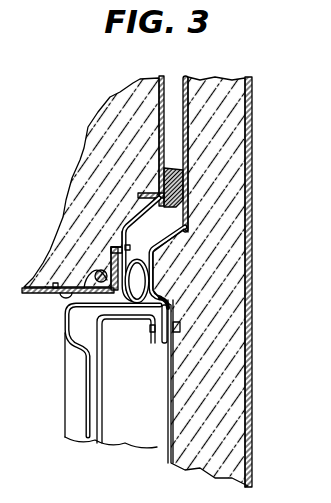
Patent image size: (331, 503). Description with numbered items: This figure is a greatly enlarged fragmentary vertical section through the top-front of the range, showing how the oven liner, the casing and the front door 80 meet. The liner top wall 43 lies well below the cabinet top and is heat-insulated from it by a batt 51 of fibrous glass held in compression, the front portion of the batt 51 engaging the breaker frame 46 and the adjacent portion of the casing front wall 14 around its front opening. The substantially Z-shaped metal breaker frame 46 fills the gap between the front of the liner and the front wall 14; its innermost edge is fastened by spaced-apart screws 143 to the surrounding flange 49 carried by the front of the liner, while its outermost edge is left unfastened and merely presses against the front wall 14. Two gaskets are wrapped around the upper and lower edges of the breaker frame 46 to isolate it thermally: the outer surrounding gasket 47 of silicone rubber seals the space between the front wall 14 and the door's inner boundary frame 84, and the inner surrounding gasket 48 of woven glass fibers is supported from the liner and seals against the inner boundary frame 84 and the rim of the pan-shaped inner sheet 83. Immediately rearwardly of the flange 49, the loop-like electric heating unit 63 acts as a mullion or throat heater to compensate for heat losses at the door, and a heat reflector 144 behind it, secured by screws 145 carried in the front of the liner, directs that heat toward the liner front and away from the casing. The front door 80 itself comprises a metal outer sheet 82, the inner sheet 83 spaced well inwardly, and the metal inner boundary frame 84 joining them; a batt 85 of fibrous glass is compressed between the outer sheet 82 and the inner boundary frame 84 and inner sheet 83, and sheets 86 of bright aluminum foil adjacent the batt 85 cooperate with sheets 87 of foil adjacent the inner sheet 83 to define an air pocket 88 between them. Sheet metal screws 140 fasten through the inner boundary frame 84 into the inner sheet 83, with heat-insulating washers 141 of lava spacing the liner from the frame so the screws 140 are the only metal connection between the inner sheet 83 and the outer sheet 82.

The front wall 14 is at (163, 78).
The top wall 43 is at (18, 293).
The breaker frame 46 is at (173, 233).
The outer surrounding gasket 47 is at (192, 168).
The inner surrounding gasket 48 is at (163, 297).
The surrounding flange 49 is at (110, 242).
The batt 51 is at (88, 163).
The loop-like electric heating unit 63 is at (58, 293).
The front door 80 is at (212, 282).
The outer sheet 82 is at (252, 330).
The inner sheet 83 is at (46, 385).
The inner boundary frame 84 is at (192, 78).
The batt 85 is at (233, 427).
The sheets of bright aluminum foil 86 is at (170, 418).
The sheets of bright aluminum foil 87 is at (100, 403).
The air pocket 88 is at (135, 440).
The sheet metal screws 140 is at (150, 329).
The heat-insulating washers 141 is at (165, 343).
The screws 143 is at (110, 249).
The heat reflector 144 is at (100, 274).
The screws 145 is at (67, 310).